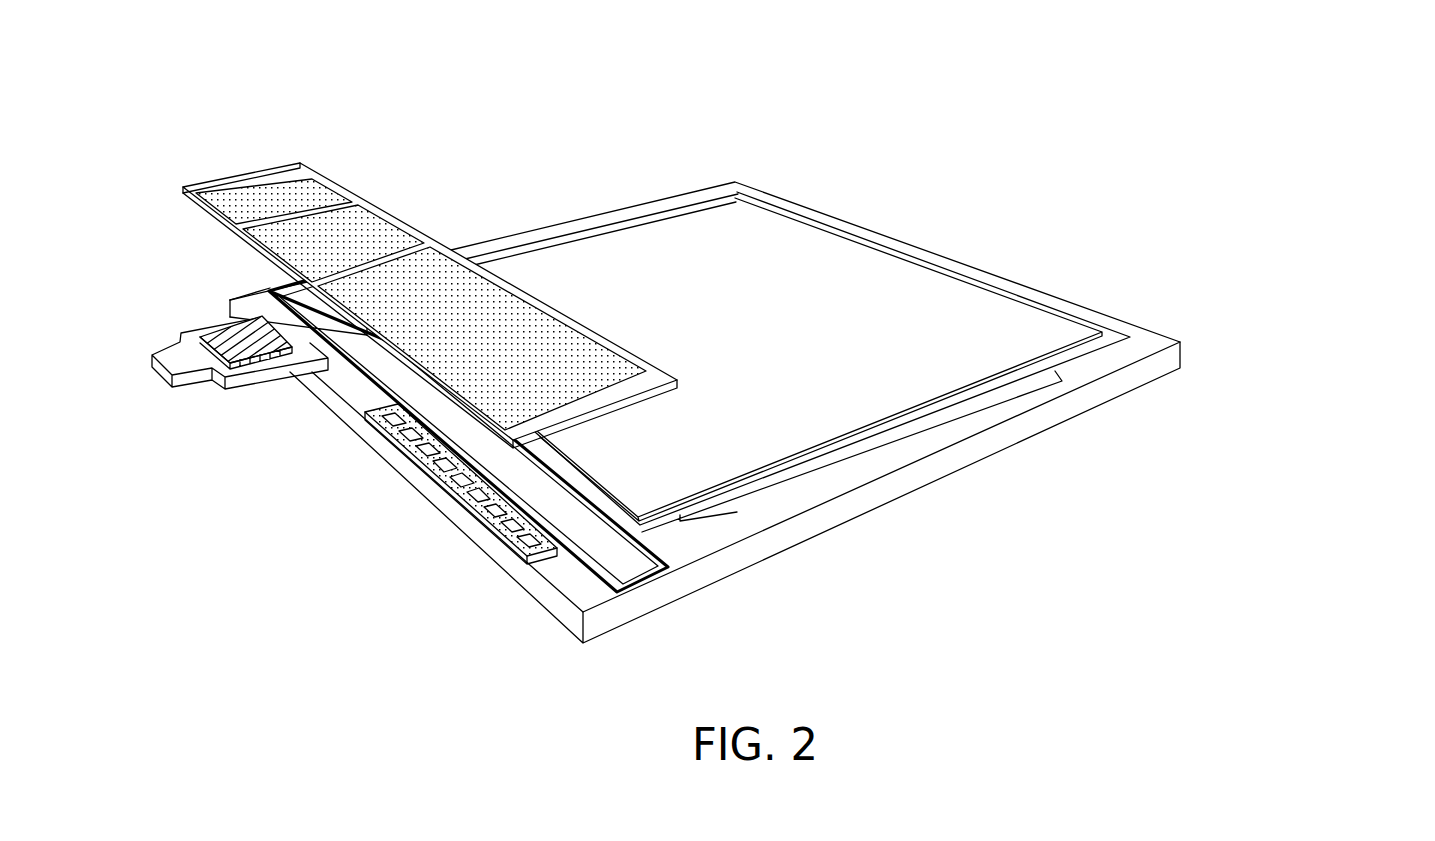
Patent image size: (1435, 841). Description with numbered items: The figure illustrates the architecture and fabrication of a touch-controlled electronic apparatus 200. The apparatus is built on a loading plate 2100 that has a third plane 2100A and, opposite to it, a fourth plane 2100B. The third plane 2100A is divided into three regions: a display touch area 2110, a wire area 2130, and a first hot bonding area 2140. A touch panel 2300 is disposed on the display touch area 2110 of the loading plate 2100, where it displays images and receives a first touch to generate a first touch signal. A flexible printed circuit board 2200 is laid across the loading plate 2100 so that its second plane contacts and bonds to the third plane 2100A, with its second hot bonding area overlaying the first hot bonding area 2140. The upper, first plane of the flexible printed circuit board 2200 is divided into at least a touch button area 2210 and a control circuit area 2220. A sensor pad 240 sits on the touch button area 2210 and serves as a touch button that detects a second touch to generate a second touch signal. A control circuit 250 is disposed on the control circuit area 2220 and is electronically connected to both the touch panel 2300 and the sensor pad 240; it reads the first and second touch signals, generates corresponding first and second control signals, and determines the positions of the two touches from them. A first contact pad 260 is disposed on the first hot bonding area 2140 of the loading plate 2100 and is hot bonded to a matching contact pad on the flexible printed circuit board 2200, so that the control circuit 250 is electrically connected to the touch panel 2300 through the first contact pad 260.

The touch-controlled electronic apparatus 200 is at (1068, 90).
The loading plate 2100 is at (1290, 281).
The third plane 2100A is at (1153, 330).
The fourth plane 2100B is at (1158, 381).
The touch panel 2300 is at (1000, 297).
The display touch area 2110 is at (1013, 378).
The wire area 2130 is at (655, 575).
The first hot bonding area 2140 is at (472, 497).
The first contact pad 260 is at (452, 473).
The flexible printed circuit board 2200 is at (222, 233).
The touch button area 2210 is at (183, 190).
The sensor pad 240 is at (247, 190).
The control circuit area 2220 is at (184, 363).
The control circuit 250 is at (230, 338).